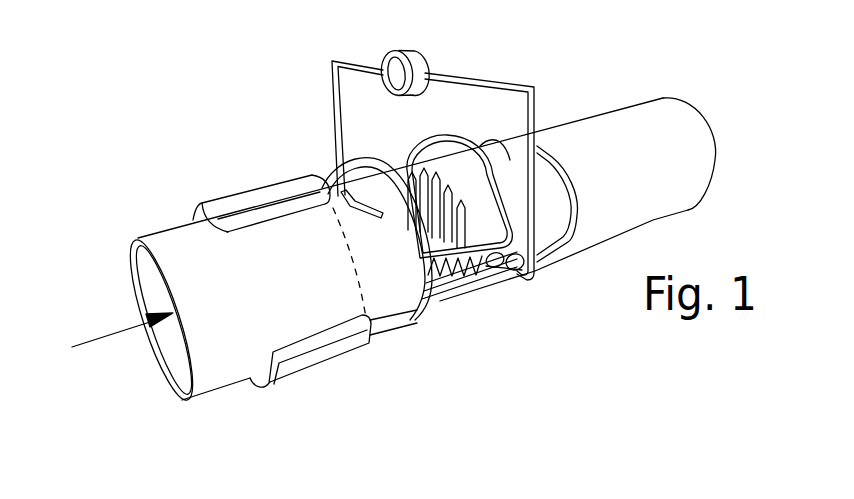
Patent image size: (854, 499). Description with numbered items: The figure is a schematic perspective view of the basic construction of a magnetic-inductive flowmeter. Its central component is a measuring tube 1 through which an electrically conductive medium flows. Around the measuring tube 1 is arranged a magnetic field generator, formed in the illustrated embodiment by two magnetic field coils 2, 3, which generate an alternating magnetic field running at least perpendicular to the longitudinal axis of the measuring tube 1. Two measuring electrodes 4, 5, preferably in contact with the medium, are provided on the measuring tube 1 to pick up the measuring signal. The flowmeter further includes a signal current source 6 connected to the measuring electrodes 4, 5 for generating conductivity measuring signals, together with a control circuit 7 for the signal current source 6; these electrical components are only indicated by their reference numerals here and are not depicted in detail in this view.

The measuring tube 1 is at (313, 358).
The magnetic field coil 2 is at (370, 165).
The magnetic field coil 3 is at (433, 288).
The measuring electrode 4 is at (513, 287).
The measuring electrode 5 is at (322, 188).
The signal current source 6 is at (423, 49).
The control circuit 7 is at (433, 170).